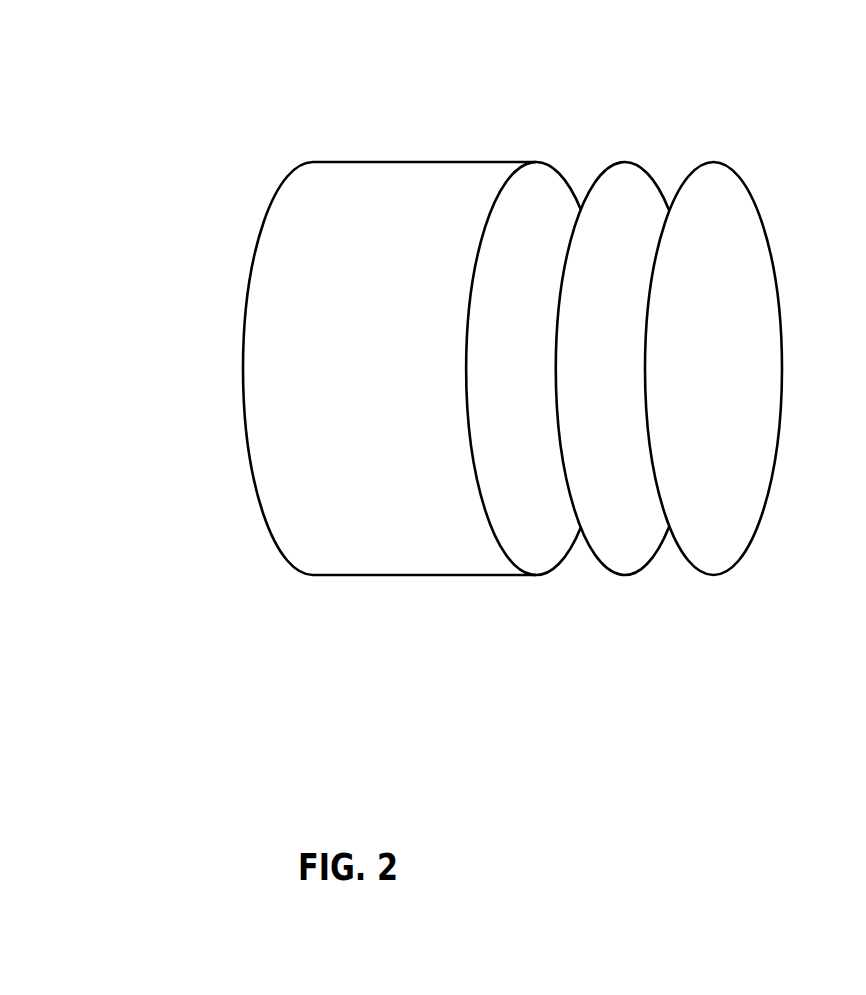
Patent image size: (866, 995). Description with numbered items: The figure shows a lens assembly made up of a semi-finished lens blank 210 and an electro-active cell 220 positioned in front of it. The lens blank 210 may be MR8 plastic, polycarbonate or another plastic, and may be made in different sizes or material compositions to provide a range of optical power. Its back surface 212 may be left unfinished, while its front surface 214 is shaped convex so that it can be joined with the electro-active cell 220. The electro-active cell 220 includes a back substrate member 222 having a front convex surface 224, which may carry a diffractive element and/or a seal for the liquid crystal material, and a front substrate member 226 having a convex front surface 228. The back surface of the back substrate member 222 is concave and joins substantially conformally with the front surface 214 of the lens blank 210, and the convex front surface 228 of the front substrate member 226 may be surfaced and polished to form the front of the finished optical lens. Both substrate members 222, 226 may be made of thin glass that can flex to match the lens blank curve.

The semi-finished lens blank 210 is at (412, 368).
The back surface 212 is at (232, 322).
The front surface 214 is at (540, 224).
The electro-active cell 220 is at (700, 351).
The back substrate member 222 is at (612, 368).
The front convex surface 224 is at (635, 224).
The front substrate member 226 is at (713, 368).
The convex front surface 228 is at (734, 246).